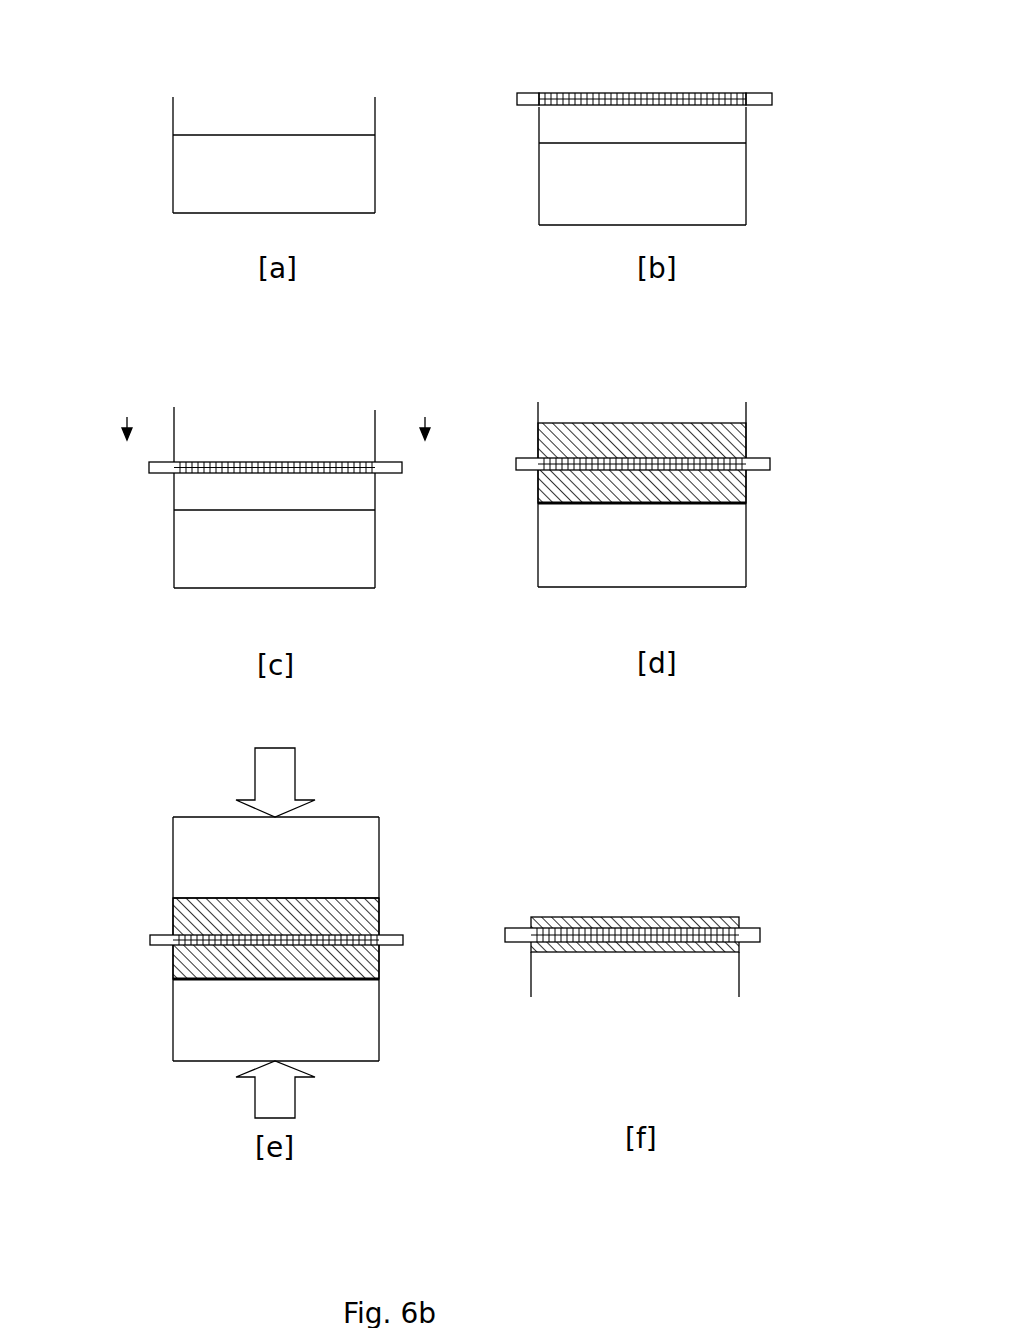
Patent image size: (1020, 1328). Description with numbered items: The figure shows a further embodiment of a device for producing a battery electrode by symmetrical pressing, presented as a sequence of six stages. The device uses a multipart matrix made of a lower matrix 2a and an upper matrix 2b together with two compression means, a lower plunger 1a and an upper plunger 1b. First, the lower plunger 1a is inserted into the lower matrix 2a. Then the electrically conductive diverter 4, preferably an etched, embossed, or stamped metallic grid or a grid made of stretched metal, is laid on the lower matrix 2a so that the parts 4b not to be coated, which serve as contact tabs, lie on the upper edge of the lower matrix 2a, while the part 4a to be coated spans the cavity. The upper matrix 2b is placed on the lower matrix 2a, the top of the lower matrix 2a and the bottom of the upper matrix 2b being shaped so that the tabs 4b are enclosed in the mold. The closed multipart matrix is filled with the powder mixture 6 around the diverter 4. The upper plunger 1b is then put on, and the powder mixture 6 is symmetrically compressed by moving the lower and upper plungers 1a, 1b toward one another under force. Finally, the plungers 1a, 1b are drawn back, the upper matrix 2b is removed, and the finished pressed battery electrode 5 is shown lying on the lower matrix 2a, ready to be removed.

The lower plunger 1a is at (212, 190).
The upper plunger 1b is at (230, 845).
The lower matrix 2a is at (163, 99).
The upper matrix 2b is at (167, 410).
The electrically conductive diverter 4 is at (508, 474).
The part to be coated 4a is at (628, 95).
The parts not to be coated 4b is at (530, 102).
The pressed battery electrode 5 is at (612, 873).
The powder mixture 6 is at (668, 440).